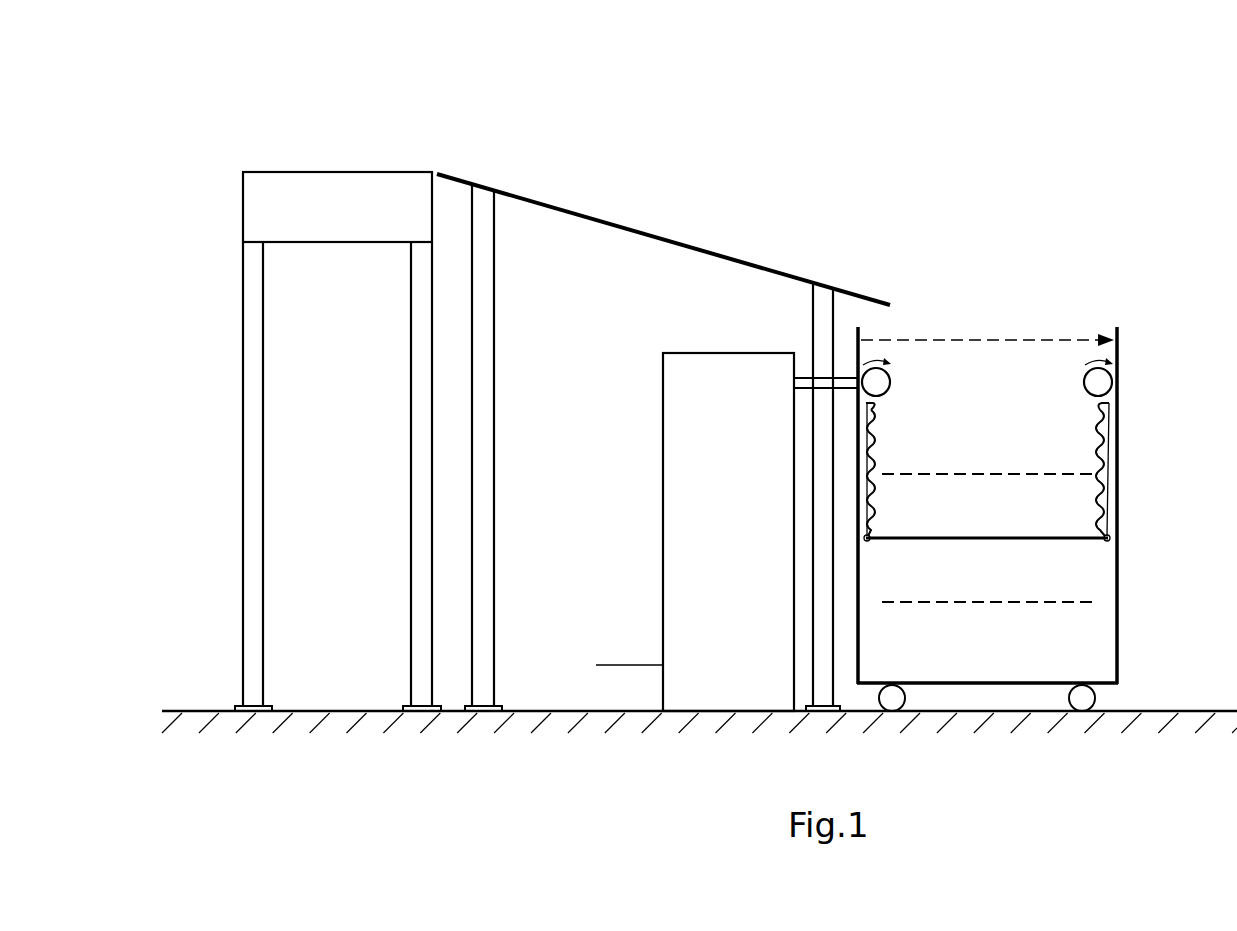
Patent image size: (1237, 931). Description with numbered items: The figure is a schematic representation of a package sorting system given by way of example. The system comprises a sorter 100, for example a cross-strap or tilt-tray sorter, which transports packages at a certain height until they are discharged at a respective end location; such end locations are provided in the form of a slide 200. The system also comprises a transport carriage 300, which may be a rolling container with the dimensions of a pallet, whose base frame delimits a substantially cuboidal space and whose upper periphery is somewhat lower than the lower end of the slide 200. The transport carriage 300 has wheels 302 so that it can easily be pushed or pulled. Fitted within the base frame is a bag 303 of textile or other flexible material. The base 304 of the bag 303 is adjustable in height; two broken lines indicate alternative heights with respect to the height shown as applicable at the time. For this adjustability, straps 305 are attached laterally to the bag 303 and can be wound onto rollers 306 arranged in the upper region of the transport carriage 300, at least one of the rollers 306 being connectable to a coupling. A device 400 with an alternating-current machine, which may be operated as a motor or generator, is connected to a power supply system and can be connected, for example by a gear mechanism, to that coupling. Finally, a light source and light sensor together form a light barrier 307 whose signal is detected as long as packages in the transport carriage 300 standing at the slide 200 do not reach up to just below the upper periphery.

The sorter 100 is at (296, 146).
The slide 200 is at (687, 241).
The transport carriage 300 is at (1026, 493).
The wheels 302 is at (1085, 701).
The bag 303 is at (1073, 448).
The base 304 is at (953, 475).
The straps 305 is at (1108, 524).
The rollers 306 is at (1105, 381).
The light barrier 307 is at (1055, 338).
The device 400 is at (713, 688).